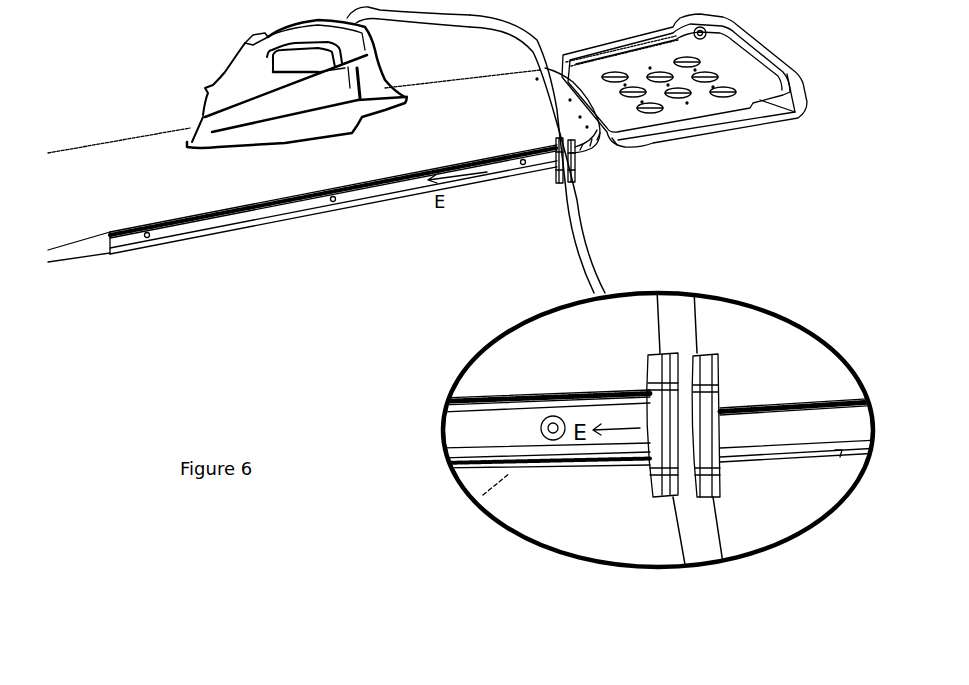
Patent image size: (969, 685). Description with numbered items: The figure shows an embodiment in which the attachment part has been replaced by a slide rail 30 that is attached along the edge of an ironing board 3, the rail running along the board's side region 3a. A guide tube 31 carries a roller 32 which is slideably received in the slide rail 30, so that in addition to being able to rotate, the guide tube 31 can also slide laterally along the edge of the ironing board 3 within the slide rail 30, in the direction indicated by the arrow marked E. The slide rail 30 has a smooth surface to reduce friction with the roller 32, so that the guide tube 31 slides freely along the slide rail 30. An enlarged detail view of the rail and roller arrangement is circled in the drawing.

The ironing board 3 is at (118, 141).
The longitudinal side edge of ironing board 3a is at (102, 213).
The slide rail 30 is at (228, 222).
The guide tube 31 is at (668, 450).
The roller 32 is at (555, 153).